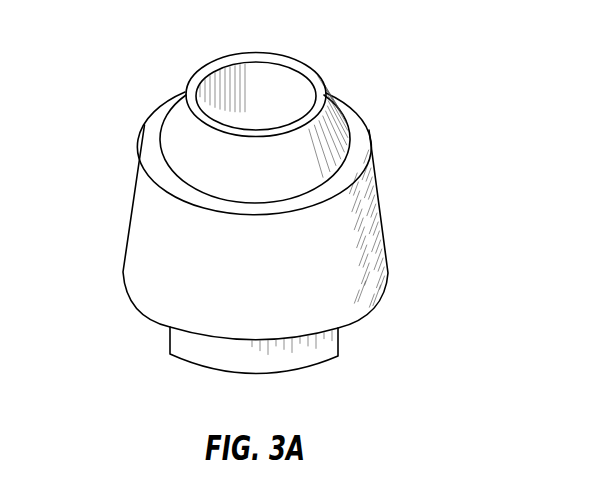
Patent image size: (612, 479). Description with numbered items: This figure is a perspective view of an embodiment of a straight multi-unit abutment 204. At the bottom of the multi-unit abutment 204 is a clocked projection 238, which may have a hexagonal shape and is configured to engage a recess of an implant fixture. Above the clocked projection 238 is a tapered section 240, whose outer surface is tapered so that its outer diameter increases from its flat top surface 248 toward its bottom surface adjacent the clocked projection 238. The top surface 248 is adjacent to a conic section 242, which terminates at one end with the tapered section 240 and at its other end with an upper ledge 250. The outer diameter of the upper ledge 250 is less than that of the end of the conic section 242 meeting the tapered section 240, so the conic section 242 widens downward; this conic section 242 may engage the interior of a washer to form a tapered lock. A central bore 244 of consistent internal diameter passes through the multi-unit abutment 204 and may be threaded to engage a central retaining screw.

The multi-unit abutment 204 is at (269, 209).
The clocked projection 238 is at (178, 340).
The tapered section 240 is at (138, 212).
The conic section 242 is at (322, 125).
The central bore 244 is at (285, 80).
The top surface 248 is at (148, 135).
The upper ledge 250 is at (195, 80).